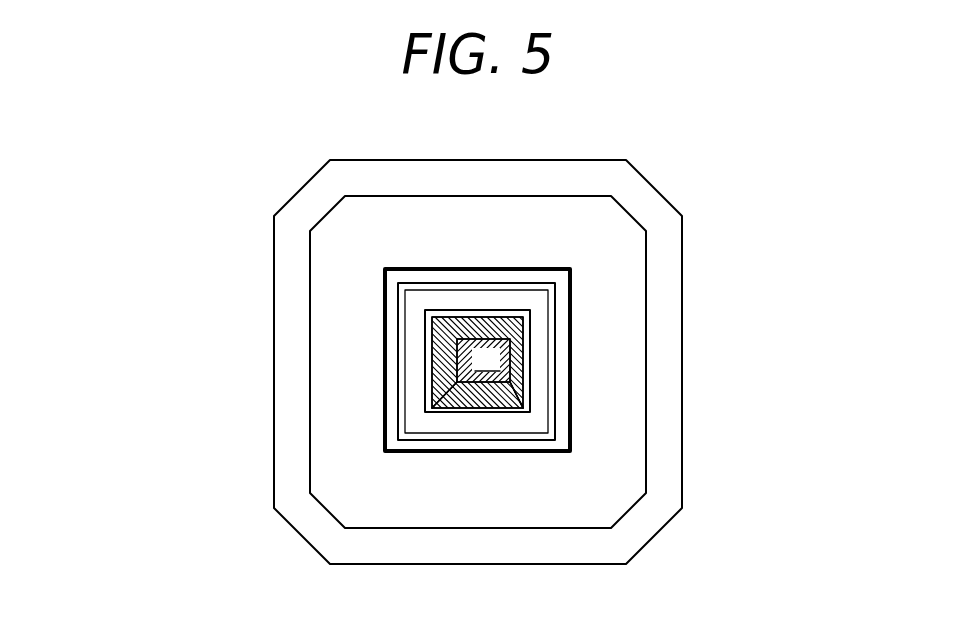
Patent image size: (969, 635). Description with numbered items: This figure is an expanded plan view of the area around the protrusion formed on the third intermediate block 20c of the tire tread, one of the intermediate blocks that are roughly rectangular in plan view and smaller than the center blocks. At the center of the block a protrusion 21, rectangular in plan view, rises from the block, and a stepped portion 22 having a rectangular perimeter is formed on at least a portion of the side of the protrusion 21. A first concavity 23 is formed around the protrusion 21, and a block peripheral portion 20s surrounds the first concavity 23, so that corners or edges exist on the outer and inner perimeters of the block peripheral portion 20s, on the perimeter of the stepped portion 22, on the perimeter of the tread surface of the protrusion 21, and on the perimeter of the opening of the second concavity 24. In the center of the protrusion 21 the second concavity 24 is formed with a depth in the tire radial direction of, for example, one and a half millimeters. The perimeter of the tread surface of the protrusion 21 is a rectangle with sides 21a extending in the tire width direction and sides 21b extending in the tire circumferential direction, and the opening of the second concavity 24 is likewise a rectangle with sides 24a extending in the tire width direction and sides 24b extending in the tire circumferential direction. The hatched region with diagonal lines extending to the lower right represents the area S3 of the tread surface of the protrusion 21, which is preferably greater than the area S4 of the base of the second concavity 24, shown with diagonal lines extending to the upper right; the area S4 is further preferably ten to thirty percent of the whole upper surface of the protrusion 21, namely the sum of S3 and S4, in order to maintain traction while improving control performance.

The third intermediate block 20c is at (691, 176).
The block peripheral portion 20s is at (557, 215).
The first concavity 23 is at (565, 292).
The stepped portion 22 is at (540, 327).
The protrusion 21 is at (523, 345).
The sides extending in the tire width direction 21a is at (455, 317).
The sides extending in the tire circumferential direction 21b is at (430, 332).
The second concavity 24 is at (432, 408).
The sides extending in the tire width direction 24a is at (488, 339).
The sides extending in the tire circumferential direction 24b is at (457, 367).
The area of the tread surface of the protrusion S3 is at (515, 405).
The area of the base of the second concavity S4 is at (486, 359).